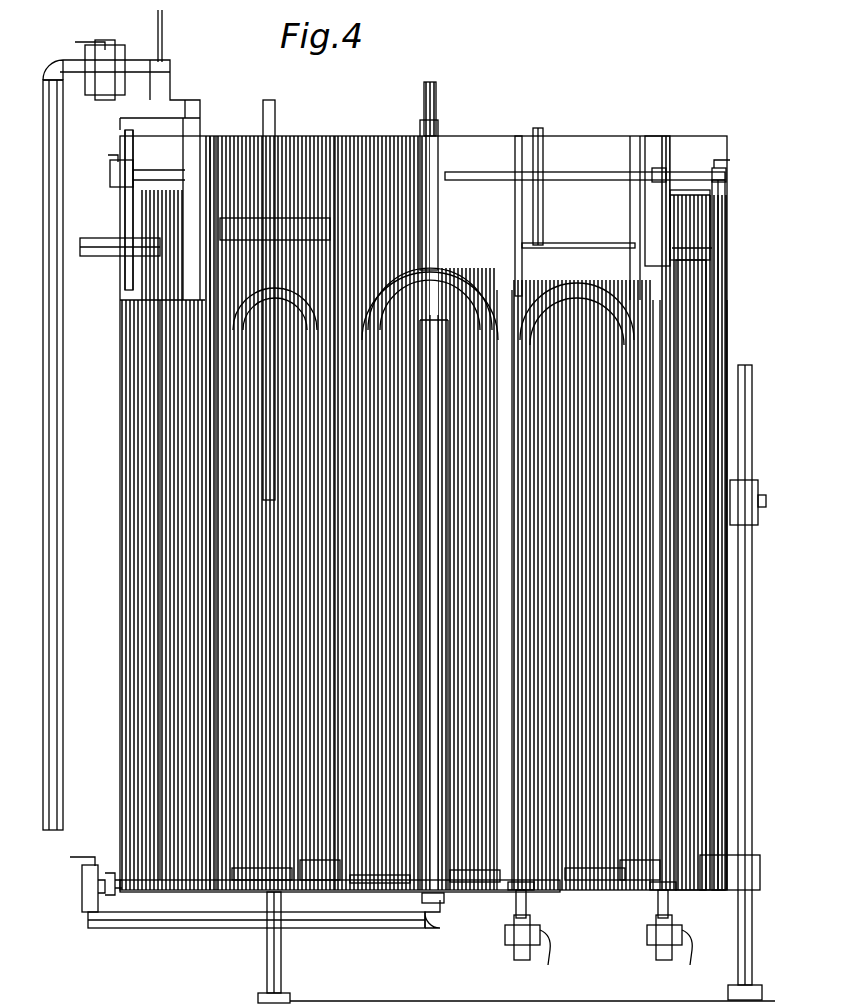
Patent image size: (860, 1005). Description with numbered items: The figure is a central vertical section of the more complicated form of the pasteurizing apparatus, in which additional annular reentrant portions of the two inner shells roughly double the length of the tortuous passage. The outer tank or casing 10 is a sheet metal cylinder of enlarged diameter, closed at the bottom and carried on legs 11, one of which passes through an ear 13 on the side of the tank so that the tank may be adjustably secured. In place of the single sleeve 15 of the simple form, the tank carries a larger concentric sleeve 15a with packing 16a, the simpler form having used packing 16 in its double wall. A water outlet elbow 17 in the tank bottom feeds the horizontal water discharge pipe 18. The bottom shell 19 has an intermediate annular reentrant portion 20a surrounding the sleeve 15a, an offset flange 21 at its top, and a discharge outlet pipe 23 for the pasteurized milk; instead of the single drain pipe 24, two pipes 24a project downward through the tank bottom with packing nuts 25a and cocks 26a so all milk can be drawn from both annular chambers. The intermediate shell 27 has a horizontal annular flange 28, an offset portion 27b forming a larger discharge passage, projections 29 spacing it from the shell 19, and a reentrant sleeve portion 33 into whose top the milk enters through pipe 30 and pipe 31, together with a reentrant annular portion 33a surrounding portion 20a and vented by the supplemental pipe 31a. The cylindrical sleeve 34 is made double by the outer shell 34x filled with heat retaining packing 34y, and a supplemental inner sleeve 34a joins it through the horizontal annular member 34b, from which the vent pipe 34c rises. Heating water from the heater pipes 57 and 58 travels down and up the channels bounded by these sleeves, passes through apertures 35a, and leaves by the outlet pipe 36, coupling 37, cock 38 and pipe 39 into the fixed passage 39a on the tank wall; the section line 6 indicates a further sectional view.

The main shell or casing 10 is at (120, 516).
The legs 11 is at (748, 716).
The ear 13 is at (755, 480).
The sleeve 15 is at (418, 312).
The concentric sleeve 15a is at (262, 882).
The non-conductive packing 16 is at (470, 892).
The packing 16a is at (305, 892).
The elbow 17 is at (436, 928).
The water discharge pipe 18 is at (357, 922).
The inner shell or casing 19 is at (160, 796).
The intermediate annular reentrant portion 20a is at (284, 292).
The offset flange 21 is at (700, 272).
The discharge outlet pipe 23 is at (100, 258).
The supplemental discharge outlet 24 is at (96, 884).
The pipes 24a is at (532, 905).
The packing nuts 25a is at (516, 905).
The cocks 26a is at (524, 960).
The inner shell 27 is at (665, 146).
The offset portion 27b is at (700, 250).
The horizontal annular flange 28 is at (690, 192).
The projections 29 is at (195, 893).
The pipe 30 is at (438, 106).
The pipe 31 is at (440, 136).
The supplemental pipe 31a is at (272, 130).
The reentrant annular sleeve portion 33 is at (476, 292).
The reentrant annular portion 33a is at (622, 292).
The cylindrical sleeve 34 is at (215, 150).
The supplemental inner sleeve 34a is at (340, 150).
The horizontal annular member 34b is at (298, 240).
The vent pipe 34c is at (538, 130).
The outer shell 34x is at (645, 140).
The heat retaining packing 34y is at (633, 142).
The apertures 35a is at (395, 895).
The outlet pipe 36 is at (580, 180).
The detachable coupling 37 is at (666, 176).
The cock 38 is at (728, 177).
The discharge pipe 39 is at (726, 216).
The fixed pipe 39a is at (725, 364).
The pipe 57 is at (122, 146).
The pipe 58 is at (185, 165).
The section line 6 is at (30, 592).